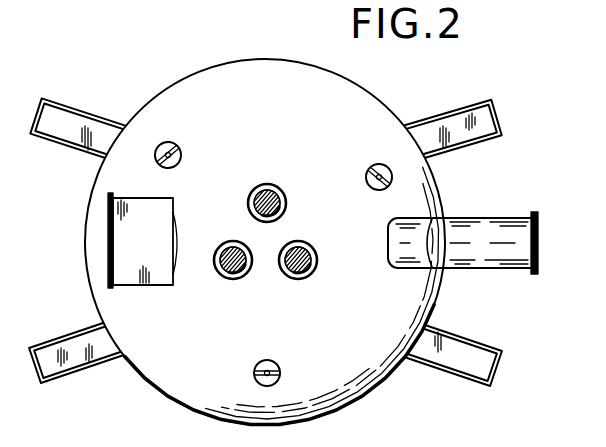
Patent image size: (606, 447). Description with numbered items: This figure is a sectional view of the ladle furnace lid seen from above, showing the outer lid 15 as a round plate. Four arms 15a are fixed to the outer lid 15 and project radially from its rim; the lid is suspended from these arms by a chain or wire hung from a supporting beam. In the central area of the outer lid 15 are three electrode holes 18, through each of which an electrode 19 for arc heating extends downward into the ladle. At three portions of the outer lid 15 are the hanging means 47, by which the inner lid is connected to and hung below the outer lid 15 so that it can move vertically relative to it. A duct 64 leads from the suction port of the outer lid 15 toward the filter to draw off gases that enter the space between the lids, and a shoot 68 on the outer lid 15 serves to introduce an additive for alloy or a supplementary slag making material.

The outer lid 15 is at (380, 358).
The arm 15a is at (45, 140).
The electrode hole 18 is at (284, 198).
The electrode 19 is at (262, 189).
The hanging means 47 is at (171, 140).
The duct 64 is at (487, 265).
The shoot 68 is at (155, 277).